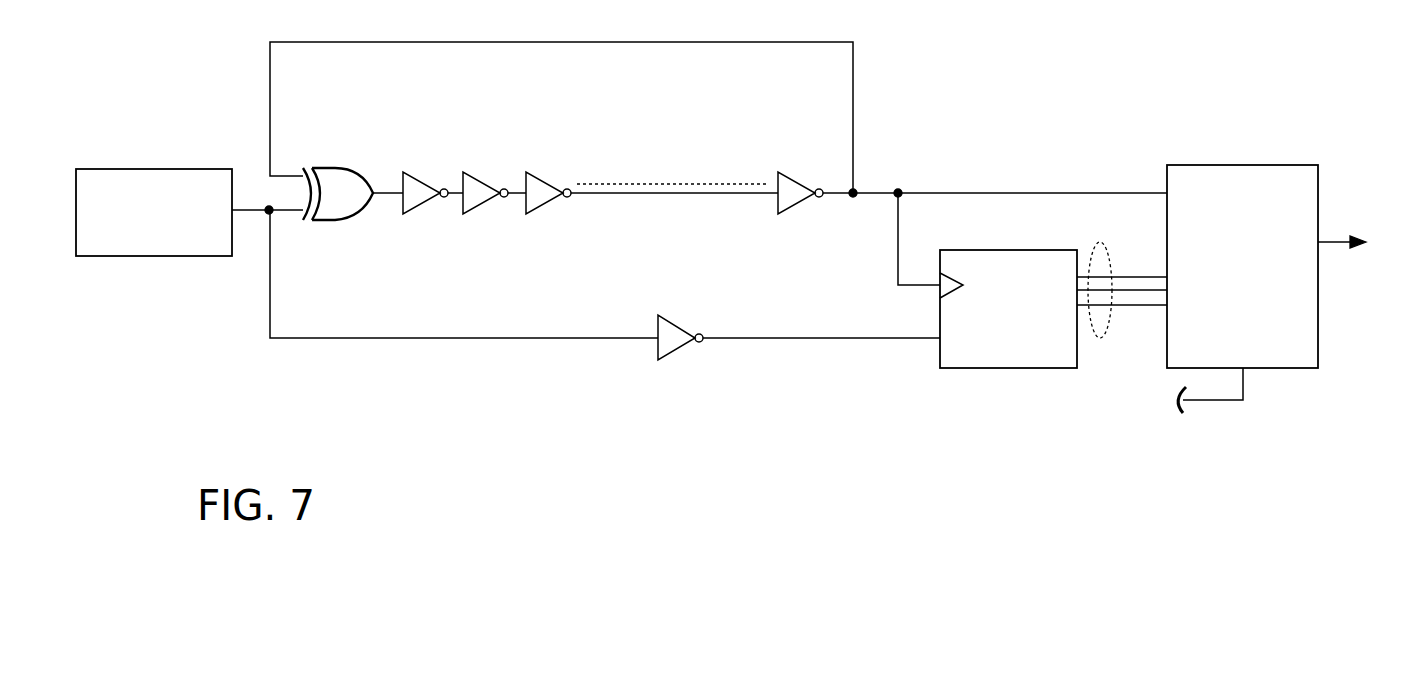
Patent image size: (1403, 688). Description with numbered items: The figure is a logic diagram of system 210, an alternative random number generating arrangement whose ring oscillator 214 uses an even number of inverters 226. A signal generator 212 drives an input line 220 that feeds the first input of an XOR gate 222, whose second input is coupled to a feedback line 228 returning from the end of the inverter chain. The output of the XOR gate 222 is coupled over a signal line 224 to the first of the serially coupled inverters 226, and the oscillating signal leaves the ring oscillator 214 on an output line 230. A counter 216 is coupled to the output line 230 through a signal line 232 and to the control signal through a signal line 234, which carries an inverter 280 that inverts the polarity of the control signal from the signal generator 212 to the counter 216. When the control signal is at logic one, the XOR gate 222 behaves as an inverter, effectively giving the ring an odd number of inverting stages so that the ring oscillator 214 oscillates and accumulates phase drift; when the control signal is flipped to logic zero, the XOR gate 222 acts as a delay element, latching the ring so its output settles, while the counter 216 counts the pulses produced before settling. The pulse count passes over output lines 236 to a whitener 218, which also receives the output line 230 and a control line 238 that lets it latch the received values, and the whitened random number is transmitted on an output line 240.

The system 210 is at (1050, 90).
The signal generator 212 is at (115, 169).
The ring oscillator 214 is at (860, 117).
The counter 216 is at (993, 250).
The whitener 218 is at (1212, 165).
The input line 220 is at (250, 210).
The XOR gate 222 is at (318, 220).
The signal line 224 is at (383, 187).
The inverters 226 is at (827, 232).
The feedback line 228 is at (567, 42).
The output line 230 is at (998, 193).
The signal line 232 is at (898, 247).
The signal line 234 is at (578, 338).
The output lines 236 is at (1100, 338).
The control line 238 is at (1233, 402).
The output line 240 is at (1330, 247).
The inverter 280 is at (673, 352).